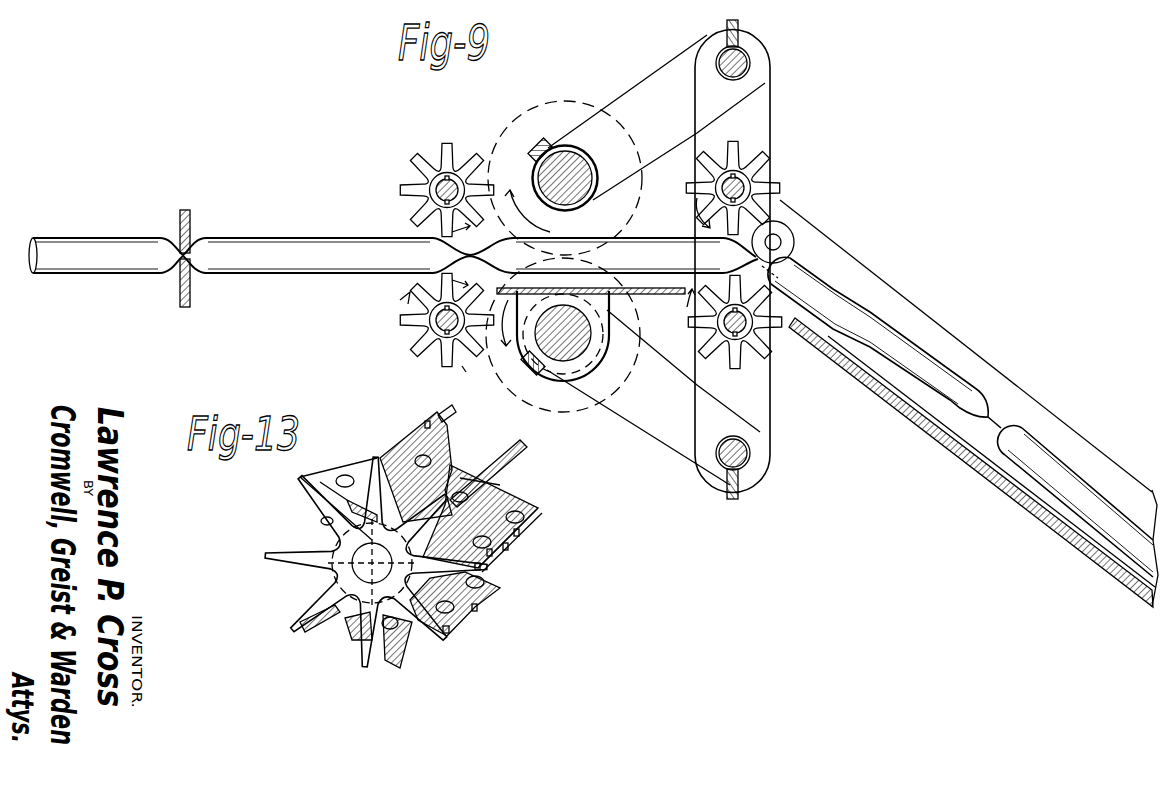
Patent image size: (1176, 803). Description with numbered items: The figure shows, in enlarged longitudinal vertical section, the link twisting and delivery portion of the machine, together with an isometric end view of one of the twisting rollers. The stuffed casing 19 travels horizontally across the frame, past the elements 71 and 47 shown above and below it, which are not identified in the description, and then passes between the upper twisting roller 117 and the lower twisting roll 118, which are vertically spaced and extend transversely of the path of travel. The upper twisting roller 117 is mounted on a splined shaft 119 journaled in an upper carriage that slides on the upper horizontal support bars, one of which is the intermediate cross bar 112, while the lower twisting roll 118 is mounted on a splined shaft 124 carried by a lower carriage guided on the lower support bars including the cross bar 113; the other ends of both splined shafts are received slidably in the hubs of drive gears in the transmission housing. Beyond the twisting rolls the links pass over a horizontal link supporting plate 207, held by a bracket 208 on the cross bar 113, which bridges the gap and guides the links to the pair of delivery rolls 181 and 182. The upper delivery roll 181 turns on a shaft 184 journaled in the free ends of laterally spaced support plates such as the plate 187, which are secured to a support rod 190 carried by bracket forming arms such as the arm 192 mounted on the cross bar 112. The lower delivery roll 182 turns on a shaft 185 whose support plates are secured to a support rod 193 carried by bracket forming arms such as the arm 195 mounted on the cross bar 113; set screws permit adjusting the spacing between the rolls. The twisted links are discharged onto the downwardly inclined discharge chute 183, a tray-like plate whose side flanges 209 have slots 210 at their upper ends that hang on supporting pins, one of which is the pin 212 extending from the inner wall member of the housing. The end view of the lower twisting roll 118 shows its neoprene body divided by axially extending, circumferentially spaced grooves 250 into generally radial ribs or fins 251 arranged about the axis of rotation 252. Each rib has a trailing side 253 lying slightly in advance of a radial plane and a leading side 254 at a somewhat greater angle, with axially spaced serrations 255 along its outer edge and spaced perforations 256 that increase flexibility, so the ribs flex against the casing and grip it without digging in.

In FIG. 9, the casing 19 is at (55, 245).
In FIG. 9, the upper pinch roller 71 is at (190, 222).
In FIG. 9, the lower pinch roller 47 is at (180, 288).
In FIG. 9, the upper twisting roller 117 is at (440, 152).
In FIG. 9, the splined shaft 119 is at (435, 191).
In FIG. 9, the lower twisting roll 118 is at (412, 350).
In FIG. 13, the lower twisting roll 118 is at (302, 608).
In FIG. 9, the splined shaft 124 is at (434, 320).
In FIG. 9, the support bar 112 is at (566, 153).
In FIG. 9, the support bar 113 is at (577, 357).
In FIG. 9, the bracket forming arm or plate 192 is at (648, 82).
In FIG. 9, the bracket forming arm or plate 195 is at (657, 440).
In FIG. 9, the support plate or arm 187 is at (763, 105).
In FIG. 9, the support rod 190 is at (745, 60).
In FIG. 9, the support rod 193 is at (760, 453).
In FIG. 9, the delivery roll 181 is at (762, 163).
In FIG. 9, the delivery roll 182 is at (765, 357).
In FIG. 9, the shaft 184 is at (706, 186).
In FIG. 9, the shaft 185 is at (713, 330).
In FIG. 9, the link supporting plate 207 is at (633, 297).
In FIG. 9, the bracket 208 is at (538, 373).
In FIG. 9, the side flanges 209 is at (890, 293).
In FIG. 9, the slots 210 is at (790, 260).
In FIG. 9, the supporting pin 212 is at (780, 240).
In FIG. 9, the delivery or discharge chute 183 is at (897, 407).
In FIG. 9, the grooves 250 is at (460, 373).
In FIG. 13, the grooves 250 is at (445, 470).
In FIG. 9, the ribs or fins 251 is at (400, 300).
In FIG. 13, the ribs or fins 251 is at (442, 420).
In FIG. 13, the axis of rotation 252 is at (372, 563).
In FIG. 13, the trailing side or surface 253 is at (508, 547).
In FIG. 13, the leading side or surface 254 is at (320, 482).
In FIG. 13, the serrations 255 is at (428, 425).
In FIG. 13, the perforations 256 is at (440, 437).